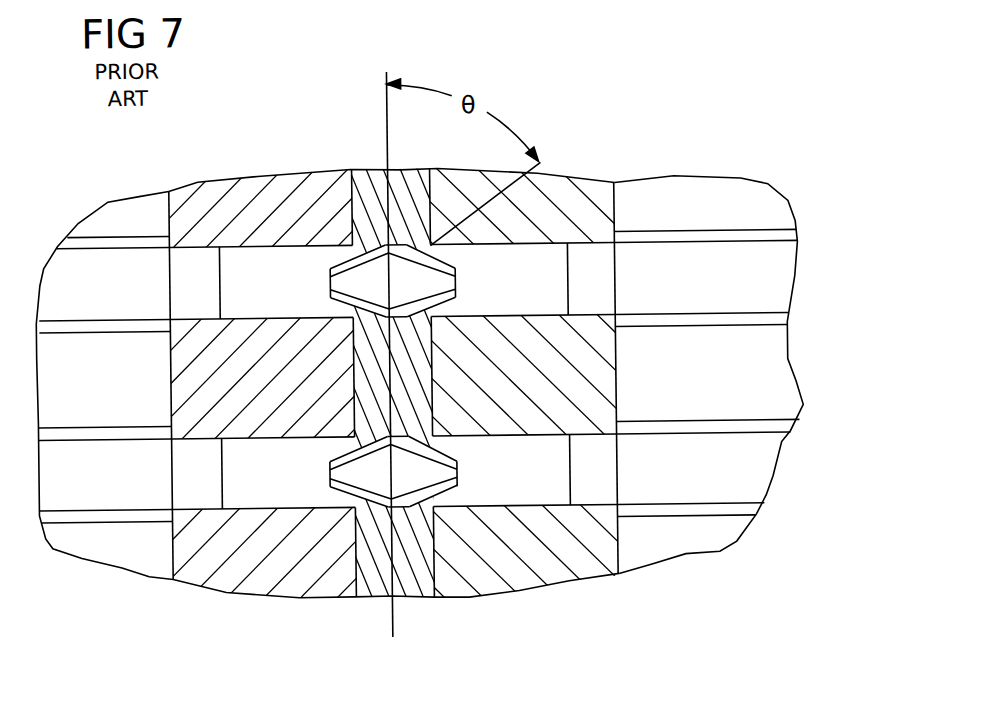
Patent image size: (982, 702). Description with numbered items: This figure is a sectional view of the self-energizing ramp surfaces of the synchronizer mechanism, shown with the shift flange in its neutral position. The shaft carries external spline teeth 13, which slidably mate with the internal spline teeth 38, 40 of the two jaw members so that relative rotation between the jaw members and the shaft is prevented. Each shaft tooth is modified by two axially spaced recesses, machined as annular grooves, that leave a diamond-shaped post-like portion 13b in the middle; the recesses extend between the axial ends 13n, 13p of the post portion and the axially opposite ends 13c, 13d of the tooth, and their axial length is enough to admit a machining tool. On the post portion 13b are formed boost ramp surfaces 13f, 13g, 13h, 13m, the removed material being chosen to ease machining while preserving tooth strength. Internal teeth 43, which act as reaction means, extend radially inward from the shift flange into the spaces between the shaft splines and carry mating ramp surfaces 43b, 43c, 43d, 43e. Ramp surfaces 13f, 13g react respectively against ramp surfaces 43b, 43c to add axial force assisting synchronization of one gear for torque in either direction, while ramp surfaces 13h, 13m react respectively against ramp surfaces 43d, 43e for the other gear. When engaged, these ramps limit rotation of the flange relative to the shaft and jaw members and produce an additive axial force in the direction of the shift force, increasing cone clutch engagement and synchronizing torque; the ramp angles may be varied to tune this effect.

The external spline teeth 13 is at (808, 246).
The post-like portion 13b is at (353, 450).
The axial end of tooth 13c is at (169, 274).
The axial end of tooth 13d is at (616, 264).
The boost ramp surface 13f is at (450, 306).
The boost ramp surface 13g is at (450, 306).
The boost ramp surface 13h is at (332, 302).
The boost ramp surface 13m is at (332, 302).
The axial end of post portion 13n is at (329, 460).
The axial end of post portion 13p is at (456, 463).
The internal spline teeth 38 is at (158, 354).
The internal spline teeth 40 is at (632, 376).
The internal teeth 43 is at (341, 574).
The ramp surface 43b is at (353, 319).
The ramp surface 43c is at (353, 243).
The ramp surface 43d is at (431, 516).
The ramp surface 43e is at (435, 434).